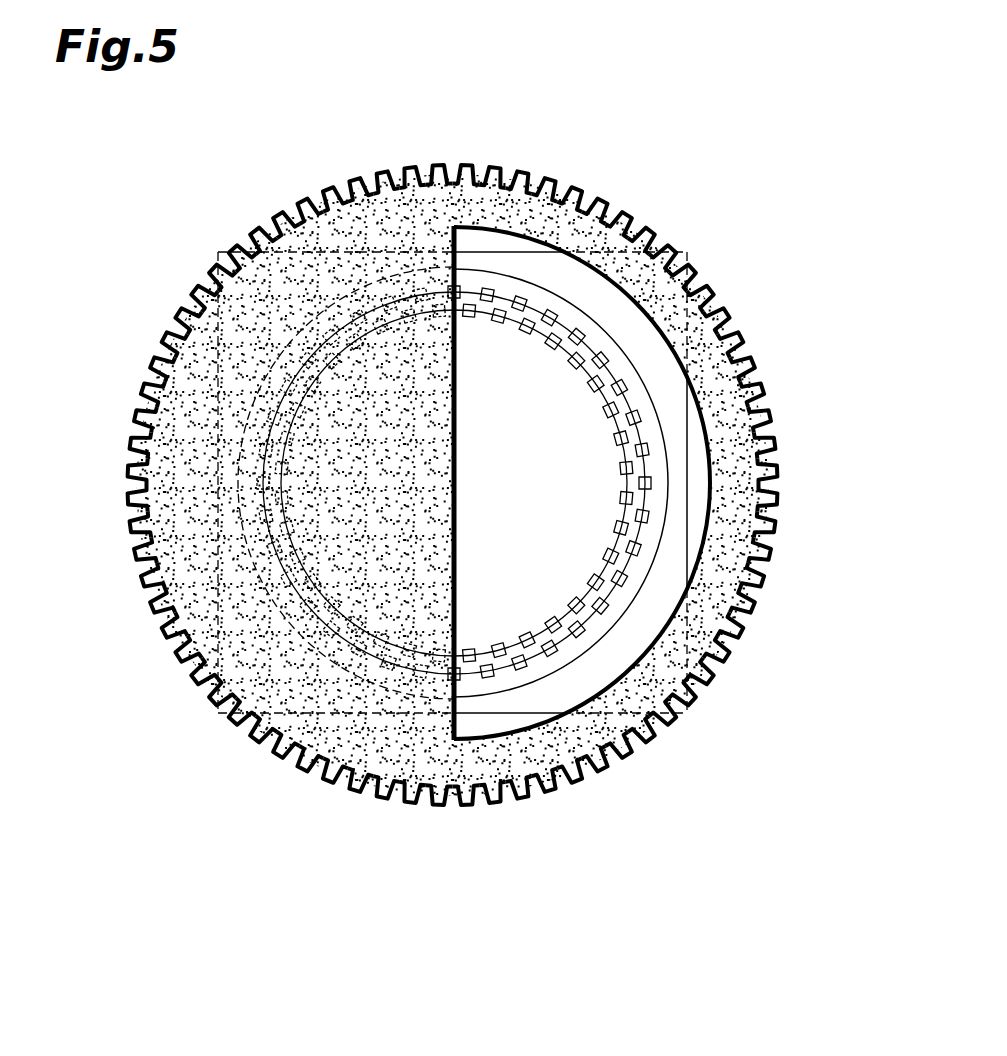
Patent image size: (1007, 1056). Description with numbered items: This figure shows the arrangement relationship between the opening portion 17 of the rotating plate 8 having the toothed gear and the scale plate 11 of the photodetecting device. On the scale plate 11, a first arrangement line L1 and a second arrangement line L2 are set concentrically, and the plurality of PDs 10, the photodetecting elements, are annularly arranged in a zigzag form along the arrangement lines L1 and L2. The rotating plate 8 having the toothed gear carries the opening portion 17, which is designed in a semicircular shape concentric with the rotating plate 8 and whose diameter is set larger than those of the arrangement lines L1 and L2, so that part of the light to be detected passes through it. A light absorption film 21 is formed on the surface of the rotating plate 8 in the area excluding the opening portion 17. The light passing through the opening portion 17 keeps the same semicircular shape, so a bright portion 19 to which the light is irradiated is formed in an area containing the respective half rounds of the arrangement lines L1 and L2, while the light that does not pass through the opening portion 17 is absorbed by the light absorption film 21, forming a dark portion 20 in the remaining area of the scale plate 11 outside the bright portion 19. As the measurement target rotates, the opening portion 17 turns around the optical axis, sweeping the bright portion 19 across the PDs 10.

The rotating plate having the toothed gear 8 is at (438, 485).
The PD (photodetecting element) 10 is at (456, 292).
The scale plate 11 is at (725, 307).
The opening portion 17 is at (452, 722).
The bright portion 19 is at (552, 404).
The dark portion 20 is at (361, 385).
The light absorption film 21 is at (185, 452).
The first arrangement line L1 is at (628, 500).
The second arrangement line L2 is at (640, 433).